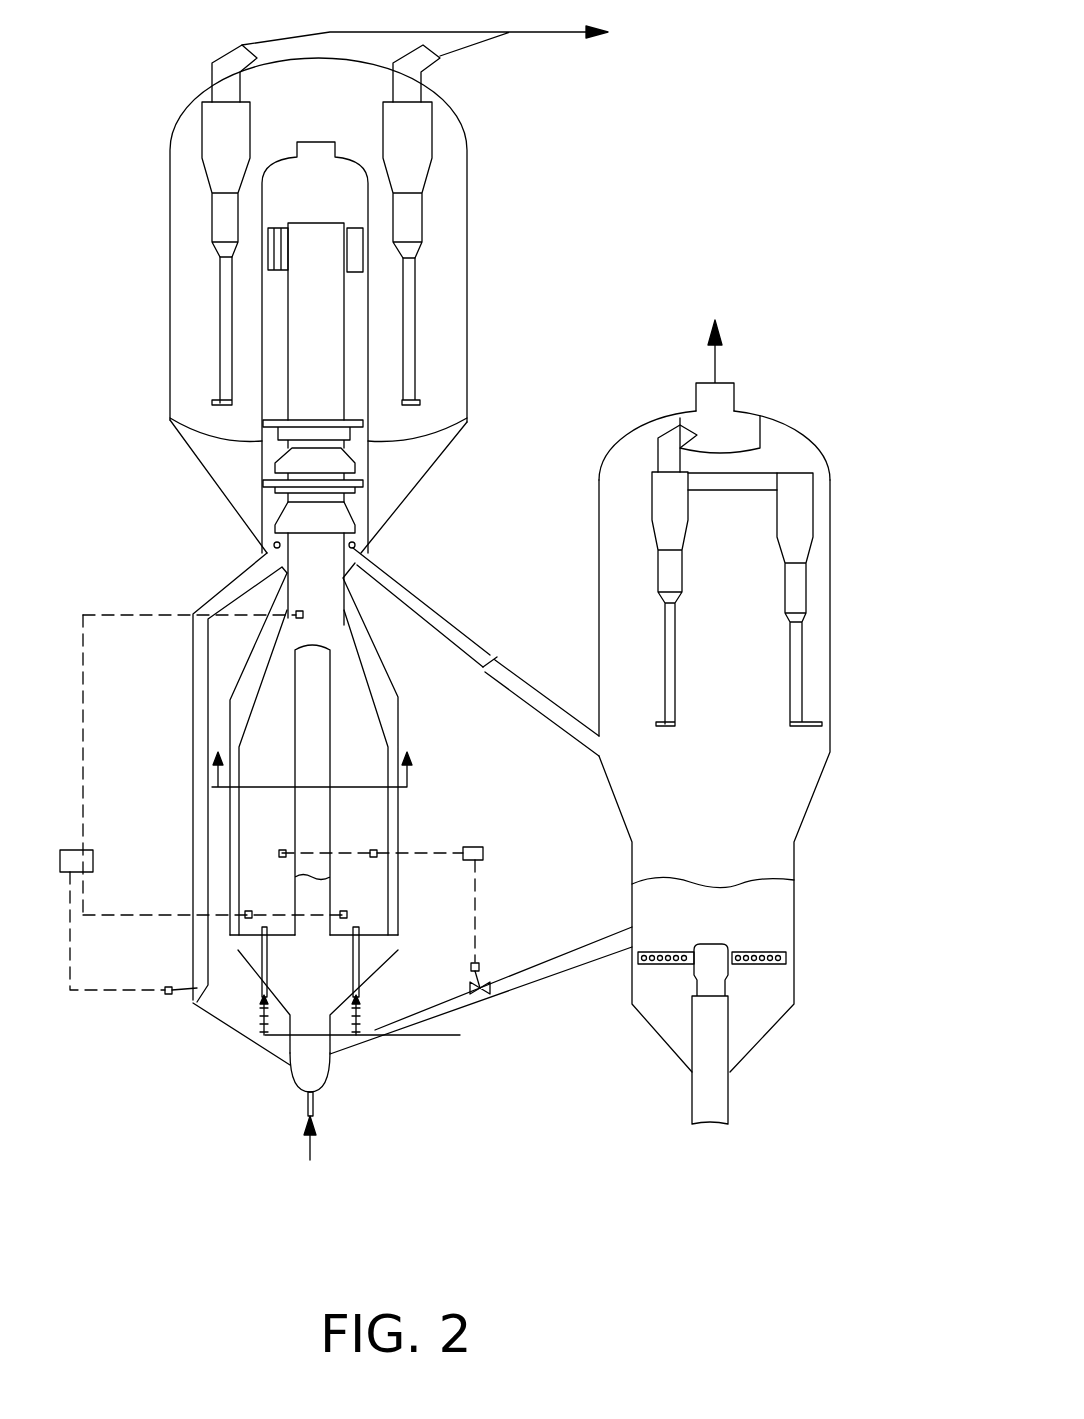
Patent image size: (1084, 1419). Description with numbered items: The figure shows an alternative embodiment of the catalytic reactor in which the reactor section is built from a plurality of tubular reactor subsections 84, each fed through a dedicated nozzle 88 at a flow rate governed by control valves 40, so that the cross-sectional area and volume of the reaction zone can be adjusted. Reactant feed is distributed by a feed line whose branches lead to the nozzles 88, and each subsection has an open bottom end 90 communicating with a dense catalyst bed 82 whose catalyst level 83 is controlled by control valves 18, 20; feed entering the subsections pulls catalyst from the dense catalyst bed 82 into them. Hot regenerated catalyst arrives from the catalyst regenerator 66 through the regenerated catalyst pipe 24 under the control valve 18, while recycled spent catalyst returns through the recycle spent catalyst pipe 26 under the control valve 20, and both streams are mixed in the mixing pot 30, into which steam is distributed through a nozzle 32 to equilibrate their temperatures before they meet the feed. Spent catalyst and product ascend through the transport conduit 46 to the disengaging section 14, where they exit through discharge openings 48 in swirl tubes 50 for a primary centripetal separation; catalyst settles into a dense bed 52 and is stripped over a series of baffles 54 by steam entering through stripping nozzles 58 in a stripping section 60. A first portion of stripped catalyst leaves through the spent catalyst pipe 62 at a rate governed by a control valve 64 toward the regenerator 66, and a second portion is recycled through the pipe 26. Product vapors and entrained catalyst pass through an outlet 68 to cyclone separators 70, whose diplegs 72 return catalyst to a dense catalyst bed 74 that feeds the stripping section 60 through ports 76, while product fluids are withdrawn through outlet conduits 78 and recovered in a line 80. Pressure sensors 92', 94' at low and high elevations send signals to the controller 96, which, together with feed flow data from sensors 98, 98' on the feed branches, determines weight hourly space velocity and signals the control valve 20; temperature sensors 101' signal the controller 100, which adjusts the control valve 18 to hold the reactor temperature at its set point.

The disengaging section 14 is at (357, 348).
The control valve 18 is at (490, 998).
The control valve 20 is at (196, 988).
The regenerated catalyst pipe 24 is at (538, 962).
The recycle spent catalyst pipe 26 is at (197, 798).
The mixing pot 30 is at (303, 1068).
The nozzle 32 is at (308, 1100).
The nozzle 40 is at (225, 1030).
The transport conduit 46 is at (312, 342).
The discharge openings 48 is at (357, 250).
The swirl tubes 50 is at (272, 270).
The dense bed 52 is at (360, 412).
The baffles 54 is at (347, 443).
The stripping nozzles 58 is at (273, 545).
The stripping section 60 is at (362, 508).
The spent catalyst pipe 62 is at (445, 618).
The control valve 64 is at (492, 672).
The catalyst regenerator 66 is at (836, 793).
The outlet 68 is at (313, 141).
The cyclone separators 70 is at (217, 135).
The dipleg 72 is at (222, 388).
The dense catalyst bed 74 is at (200, 427).
The ports 76 is at (260, 447).
The outlet conduits 78 is at (212, 75).
The line 80 is at (543, 32).
The dense catalyst bed 82 is at (368, 948).
The catalyst level 83 is at (392, 900).
The reactor subsections 84 is at (250, 832).
The nozzles 88 is at (263, 950).
The open bottom end 90 is at (237, 935).
The pressure sensor 92' is at (215, 899).
The pressure sensor 94' is at (193, 633).
The controller 96 is at (130, 838).
The stripping gas inlet 98 is at (209, 1021).
The sensors 98' is at (380, 1005).
The controller 100 is at (483, 850).
The temperature sensors 101' is at (377, 892).